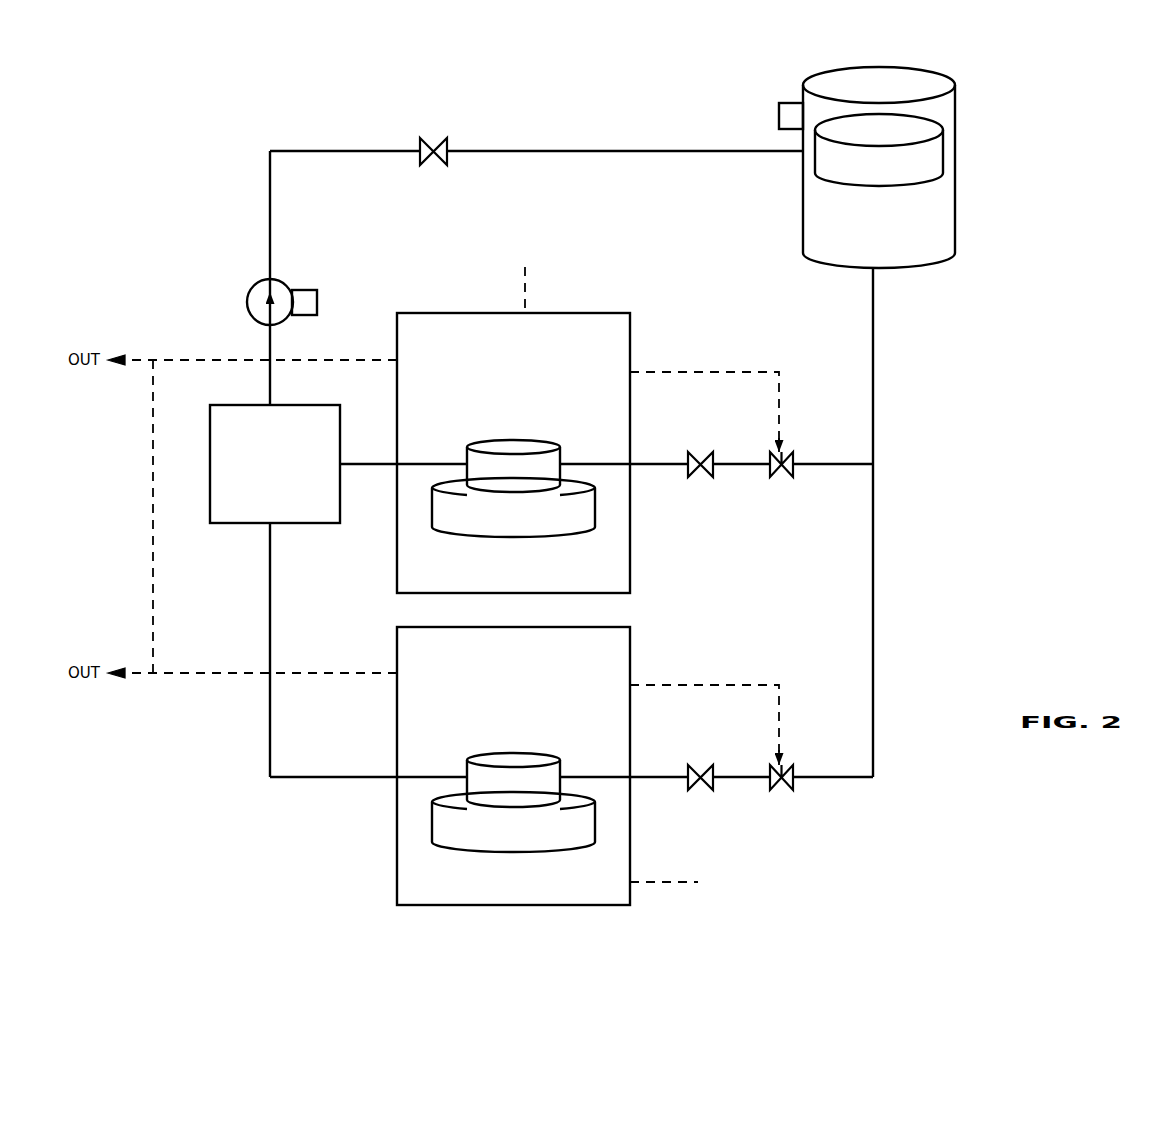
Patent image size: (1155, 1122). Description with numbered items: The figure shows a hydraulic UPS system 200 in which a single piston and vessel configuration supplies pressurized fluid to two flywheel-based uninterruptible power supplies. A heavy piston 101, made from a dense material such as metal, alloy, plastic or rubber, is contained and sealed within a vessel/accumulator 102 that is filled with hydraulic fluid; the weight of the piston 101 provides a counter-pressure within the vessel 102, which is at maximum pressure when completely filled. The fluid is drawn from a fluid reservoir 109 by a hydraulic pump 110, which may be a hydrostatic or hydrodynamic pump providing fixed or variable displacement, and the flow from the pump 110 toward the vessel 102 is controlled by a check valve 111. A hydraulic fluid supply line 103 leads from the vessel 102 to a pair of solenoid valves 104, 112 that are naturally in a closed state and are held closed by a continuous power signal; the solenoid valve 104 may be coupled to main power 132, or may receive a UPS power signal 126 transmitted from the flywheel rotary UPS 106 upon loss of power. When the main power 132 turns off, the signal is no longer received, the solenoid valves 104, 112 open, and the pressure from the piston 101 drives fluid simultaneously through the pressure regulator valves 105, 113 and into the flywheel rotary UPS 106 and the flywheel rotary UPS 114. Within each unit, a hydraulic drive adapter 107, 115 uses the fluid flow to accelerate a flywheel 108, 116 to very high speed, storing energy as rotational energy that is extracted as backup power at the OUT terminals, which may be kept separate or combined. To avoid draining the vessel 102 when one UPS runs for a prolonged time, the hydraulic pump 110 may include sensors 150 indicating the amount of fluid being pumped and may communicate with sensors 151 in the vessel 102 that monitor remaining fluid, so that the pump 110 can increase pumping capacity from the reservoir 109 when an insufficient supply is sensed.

The hydraulic UPS system 200 is at (162, 205).
The piston 101 is at (945, 160).
The vessel/accumulator 102 is at (958, 218).
The hydraulic fluid supply line 103 is at (914, 522).
The solenoid valve 104 is at (780, 502).
The pressure regulator valve 105 is at (698, 430).
The flywheel rotary UPS 106 is at (513, 453).
The hydraulic drive adapter 107 is at (562, 442).
The flywheel 108 is at (430, 522).
The fluid reservoir 109 is at (275, 464).
The hydraulic pump 110 is at (231, 300).
The check valve 111 is at (437, 188).
The solenoid valve 112 is at (780, 803).
The pressure regulator valve 113 is at (698, 743).
The flywheel rotary UPS 114 is at (513, 766).
The hydraulic drive adapter 115 is at (562, 757).
The flywheel 116 is at (430, 815).
The UPS power signal 126 is at (745, 568).
The main power 132 is at (635, 561).
The sensor 150 is at (307, 285).
The sensor 151 is at (772, 112).